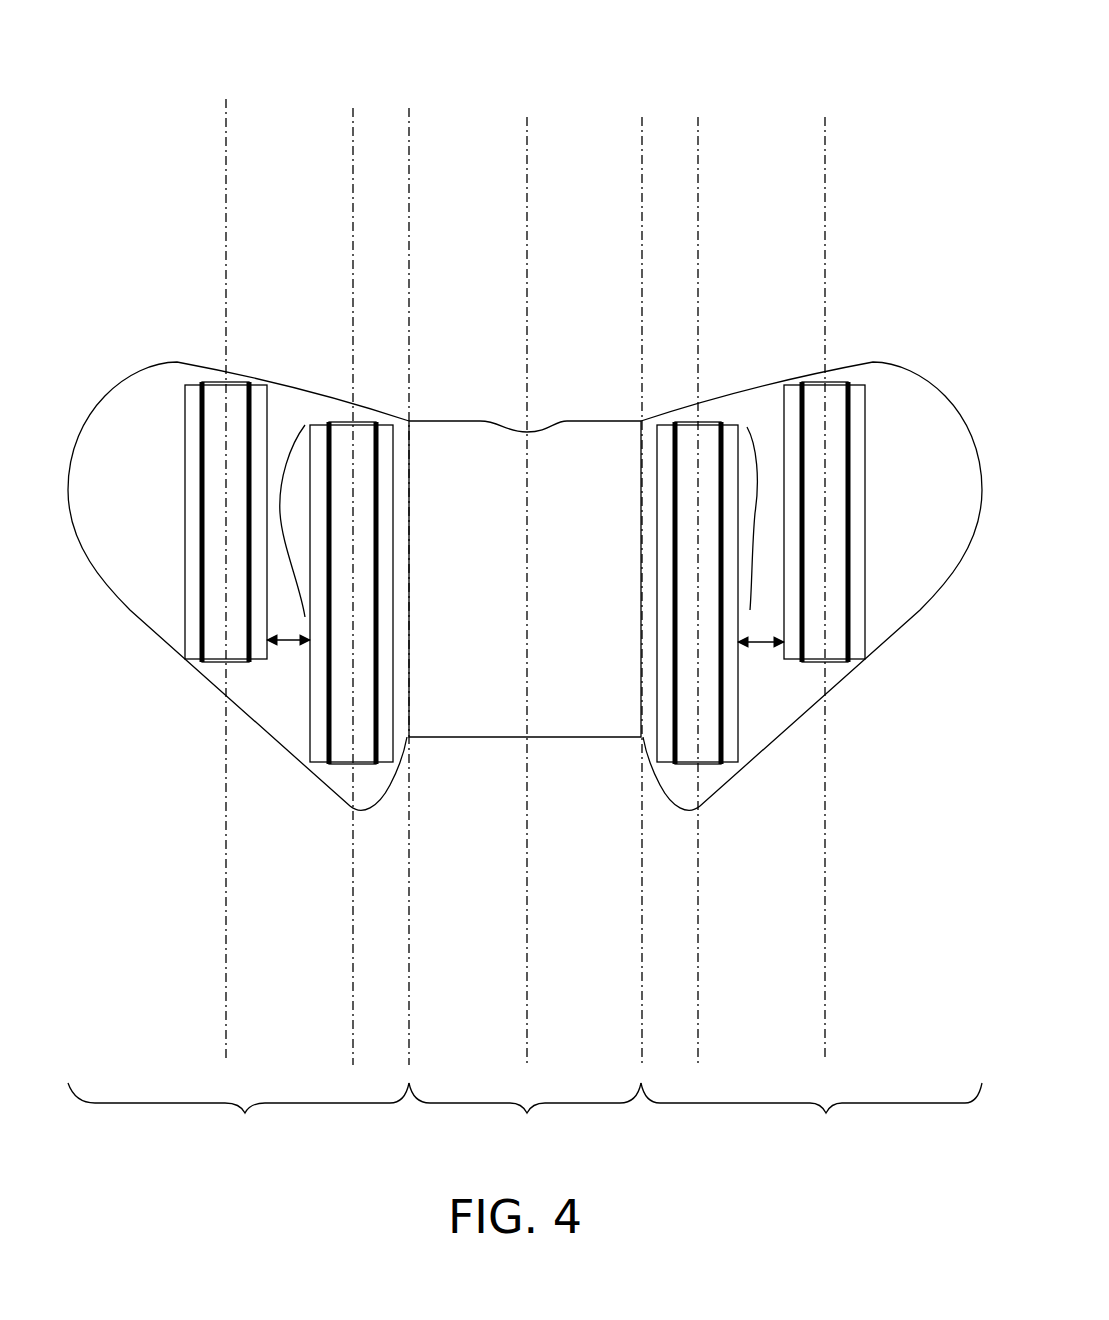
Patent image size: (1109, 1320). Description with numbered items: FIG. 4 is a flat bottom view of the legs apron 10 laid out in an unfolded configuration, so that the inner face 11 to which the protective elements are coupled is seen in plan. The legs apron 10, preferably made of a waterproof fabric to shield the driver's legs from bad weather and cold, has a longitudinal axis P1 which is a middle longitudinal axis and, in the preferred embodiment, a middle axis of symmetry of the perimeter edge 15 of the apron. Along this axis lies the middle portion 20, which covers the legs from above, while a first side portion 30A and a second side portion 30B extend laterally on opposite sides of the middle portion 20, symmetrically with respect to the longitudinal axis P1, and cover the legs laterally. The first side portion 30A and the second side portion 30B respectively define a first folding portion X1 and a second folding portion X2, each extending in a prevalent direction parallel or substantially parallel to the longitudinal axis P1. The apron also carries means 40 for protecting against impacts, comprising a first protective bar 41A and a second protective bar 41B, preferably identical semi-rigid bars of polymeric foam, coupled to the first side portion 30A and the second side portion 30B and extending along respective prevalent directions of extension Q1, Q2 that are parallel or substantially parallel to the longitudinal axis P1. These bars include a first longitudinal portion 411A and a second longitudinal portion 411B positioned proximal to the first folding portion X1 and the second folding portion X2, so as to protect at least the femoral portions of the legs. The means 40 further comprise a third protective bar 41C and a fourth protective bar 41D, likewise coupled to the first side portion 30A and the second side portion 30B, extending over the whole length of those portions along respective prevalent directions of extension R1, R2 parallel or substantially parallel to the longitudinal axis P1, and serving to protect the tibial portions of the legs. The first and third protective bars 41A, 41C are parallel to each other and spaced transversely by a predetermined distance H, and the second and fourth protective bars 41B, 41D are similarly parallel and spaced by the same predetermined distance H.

The legs apron 10 is at (740, 190).
The inner face 11 is at (480, 693).
The perimeter edge 15 is at (938, 387).
The middle portion 20 is at (525, 1116).
The first side portion 30A is at (238, 1116).
The second side portion 30B is at (811, 1116).
The means for protecting against impacts 40 is at (732, 375).
The first protective bar 41A is at (343, 763).
The second protective bar 41B is at (709, 763).
The third protective bar 41C is at (212, 661).
The fourth protective bar 41D is at (840, 661).
The first longitudinal portion 411A is at (290, 522).
The second longitudinal portion 411B is at (762, 513).
The predetermined distance H is at (290, 644).
The prevalent direction of extension of third protective bar R1 is at (226, 197).
The prevalent direction of extension of fourth protective bar R2 is at (825, 207).
The prevalent direction of extension of first protective bar Q1 is at (353, 148).
The prevalent direction of extension of second protective bar Q2 is at (698, 152).
The first folding portion X1 is at (409, 145).
The second folding portion X2 is at (642, 146).
The longitudinal axis P1 is at (527, 145).